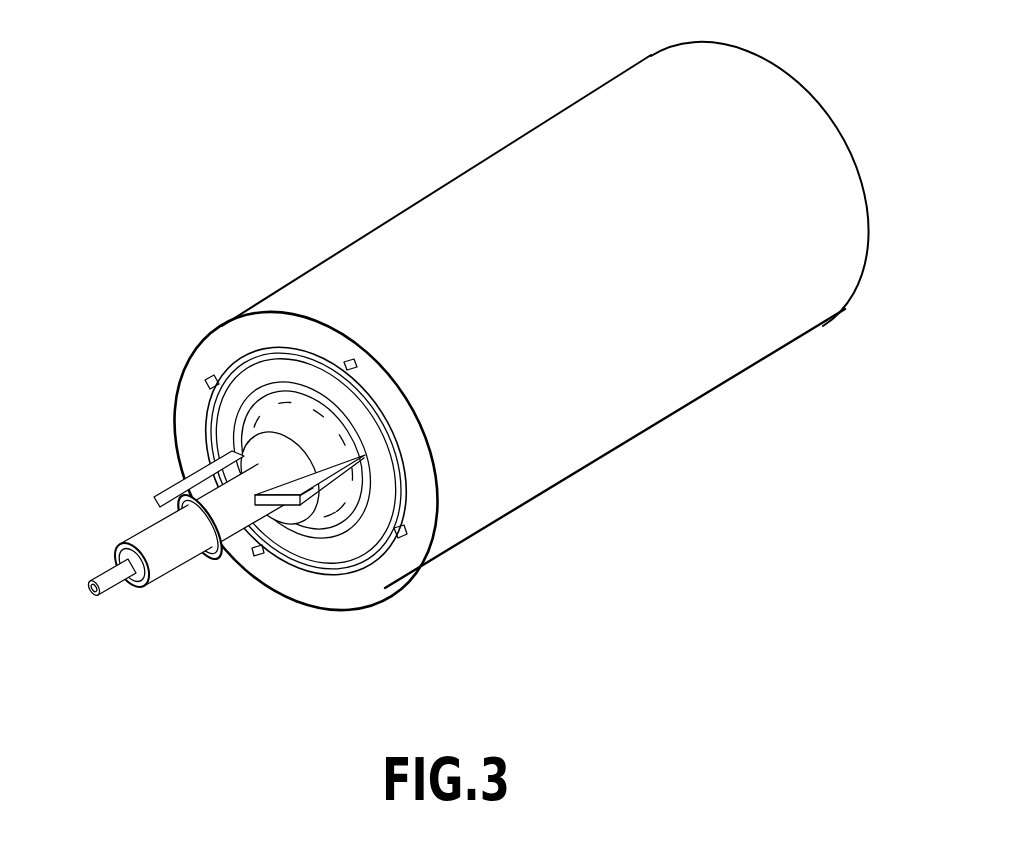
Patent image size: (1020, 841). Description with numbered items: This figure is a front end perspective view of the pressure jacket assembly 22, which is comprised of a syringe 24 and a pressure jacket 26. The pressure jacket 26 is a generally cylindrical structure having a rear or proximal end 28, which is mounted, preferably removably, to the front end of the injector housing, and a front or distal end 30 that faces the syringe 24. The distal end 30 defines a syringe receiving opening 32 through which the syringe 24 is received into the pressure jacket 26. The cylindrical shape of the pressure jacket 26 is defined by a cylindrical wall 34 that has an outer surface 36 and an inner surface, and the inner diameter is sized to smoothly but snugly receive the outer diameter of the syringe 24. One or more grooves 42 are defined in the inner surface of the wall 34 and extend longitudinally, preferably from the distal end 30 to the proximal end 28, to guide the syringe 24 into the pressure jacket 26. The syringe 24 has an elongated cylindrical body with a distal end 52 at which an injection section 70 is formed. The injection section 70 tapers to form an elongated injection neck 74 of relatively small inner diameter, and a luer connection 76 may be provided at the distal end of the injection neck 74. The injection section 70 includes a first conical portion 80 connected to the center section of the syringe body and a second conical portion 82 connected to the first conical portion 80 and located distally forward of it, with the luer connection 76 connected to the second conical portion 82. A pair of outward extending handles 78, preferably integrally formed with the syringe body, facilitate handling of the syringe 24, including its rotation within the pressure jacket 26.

The pressure jacket assembly 22 is at (569, 315).
The syringe 24 is at (298, 546).
The pressure jacket 26 is at (578, 96).
The proximal end 28 is at (838, 344).
The distal end 30 is at (323, 478).
The syringe receiving opening 32 is at (379, 532).
The cylindrical wall 34 is at (434, 484).
The outer surface 36 is at (636, 243).
The grooves 42 is at (207, 384).
The distal end 52 is at (113, 620).
The injection section 70 is at (197, 560).
The injection neck 74 is at (268, 442).
The luer connection 76 is at (102, 573).
The handles 78 is at (170, 490).
The first conical portion 80 is at (222, 556).
The second conical portion 82 is at (142, 537).